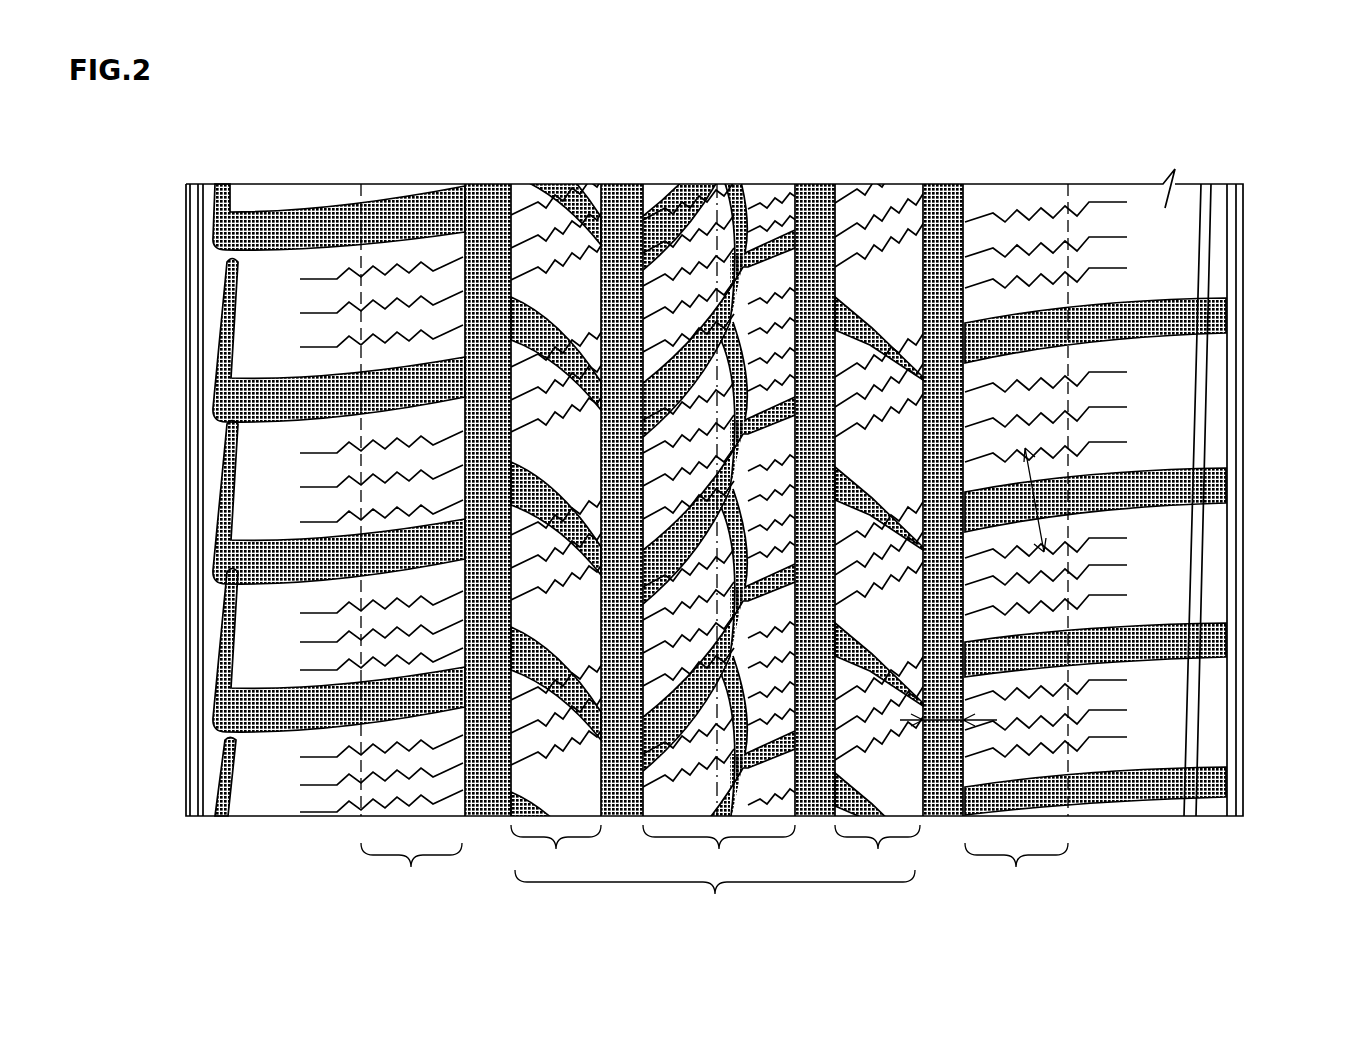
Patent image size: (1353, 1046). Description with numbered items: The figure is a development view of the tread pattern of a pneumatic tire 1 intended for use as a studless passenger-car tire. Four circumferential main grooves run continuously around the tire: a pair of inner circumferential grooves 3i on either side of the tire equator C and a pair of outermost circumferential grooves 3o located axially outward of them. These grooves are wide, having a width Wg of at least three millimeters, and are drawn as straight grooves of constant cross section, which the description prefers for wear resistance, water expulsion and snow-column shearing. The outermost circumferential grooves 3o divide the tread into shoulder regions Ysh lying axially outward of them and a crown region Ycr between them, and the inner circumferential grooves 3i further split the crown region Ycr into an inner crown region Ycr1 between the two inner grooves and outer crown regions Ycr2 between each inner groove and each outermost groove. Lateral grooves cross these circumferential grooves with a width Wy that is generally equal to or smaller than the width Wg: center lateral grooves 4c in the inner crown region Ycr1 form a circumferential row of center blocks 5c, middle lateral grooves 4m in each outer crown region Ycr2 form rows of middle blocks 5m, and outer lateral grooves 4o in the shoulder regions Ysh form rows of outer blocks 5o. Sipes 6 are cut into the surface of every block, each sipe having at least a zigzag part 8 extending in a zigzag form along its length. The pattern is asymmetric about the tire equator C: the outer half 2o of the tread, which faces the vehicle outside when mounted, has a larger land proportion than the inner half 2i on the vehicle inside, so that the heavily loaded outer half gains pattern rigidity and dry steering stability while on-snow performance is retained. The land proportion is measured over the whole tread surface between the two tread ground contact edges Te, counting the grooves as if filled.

The pneumatic tire 1 is at (1210, 164).
The inner half of the tread portion 2i is at (479, 910).
The outer half of the tread portion 2o is at (950, 914).
The outermost circumferential grooves 3o is at (495, 205).
The inner circumferential grooves 3i is at (620, 210).
The outer lateral grooves 4o is at (387, 218).
The middle lateral grooves 4m is at (552, 300).
The center lateral grooves 4c is at (658, 225).
The outer blocks 5o is at (440, 280).
The middle blocks 5m is at (590, 250).
The center blocks 5c is at (689, 250).
The sipes 6 is at (318, 278).
The zigzag part 8 is at (1020, 240).
The tire equator C is at (717, 832).
The tread ground contact edges Te is at (1108, 875).
The shoulder regions Ysh is at (714, 872).
The crown region Ycr is at (715, 899).
The inner crown region Ycr1 is at (719, 852).
The outer crown regions Ycr2 is at (715, 852).
The width of lateral grooves Wy is at (1037, 484).
The width of circumferential main grooves Wg is at (943, 723).